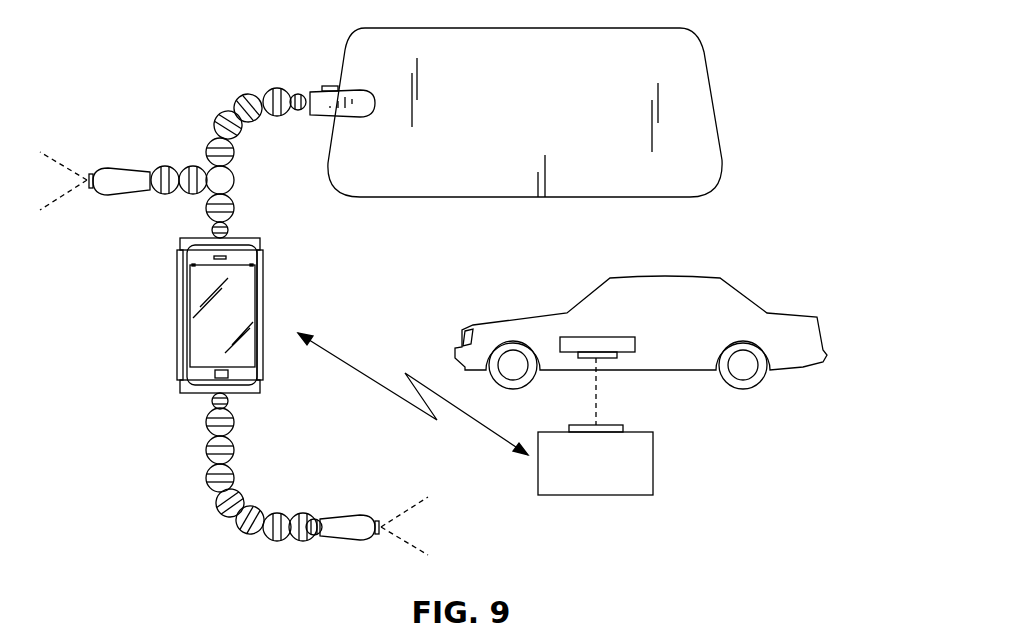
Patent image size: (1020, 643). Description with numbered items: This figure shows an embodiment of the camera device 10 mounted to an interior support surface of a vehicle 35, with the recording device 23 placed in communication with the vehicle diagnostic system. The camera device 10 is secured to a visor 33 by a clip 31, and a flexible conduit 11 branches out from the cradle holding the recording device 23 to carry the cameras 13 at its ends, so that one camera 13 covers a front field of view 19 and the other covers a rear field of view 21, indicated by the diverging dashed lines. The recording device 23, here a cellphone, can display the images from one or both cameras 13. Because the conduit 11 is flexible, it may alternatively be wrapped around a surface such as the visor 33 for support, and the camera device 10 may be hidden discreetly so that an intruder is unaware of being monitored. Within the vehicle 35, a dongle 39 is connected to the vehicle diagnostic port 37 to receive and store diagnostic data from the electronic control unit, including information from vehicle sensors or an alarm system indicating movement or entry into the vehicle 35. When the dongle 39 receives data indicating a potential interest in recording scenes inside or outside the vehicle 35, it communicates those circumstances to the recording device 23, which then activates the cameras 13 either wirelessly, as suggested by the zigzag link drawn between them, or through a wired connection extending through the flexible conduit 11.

The camera device 10 is at (89, 449).
The flexible conduit 11 is at (225, 114).
The camera 13 is at (117, 167).
The front field of view 19 is at (29, 189).
The rear field of view 21 is at (416, 537).
The recording device 23 is at (203, 291).
The clip 31 is at (322, 86).
The visor 33 is at (498, 107).
The vehicle 35 is at (654, 274).
The vehicle diagnostic port 37 is at (617, 336).
The dongle 39 is at (653, 455).